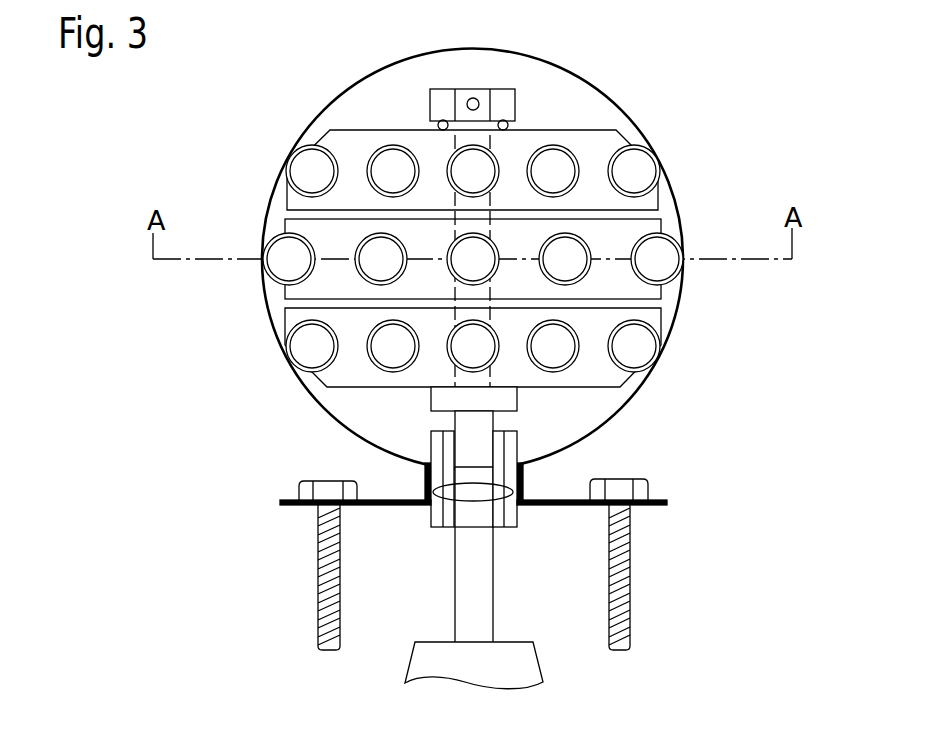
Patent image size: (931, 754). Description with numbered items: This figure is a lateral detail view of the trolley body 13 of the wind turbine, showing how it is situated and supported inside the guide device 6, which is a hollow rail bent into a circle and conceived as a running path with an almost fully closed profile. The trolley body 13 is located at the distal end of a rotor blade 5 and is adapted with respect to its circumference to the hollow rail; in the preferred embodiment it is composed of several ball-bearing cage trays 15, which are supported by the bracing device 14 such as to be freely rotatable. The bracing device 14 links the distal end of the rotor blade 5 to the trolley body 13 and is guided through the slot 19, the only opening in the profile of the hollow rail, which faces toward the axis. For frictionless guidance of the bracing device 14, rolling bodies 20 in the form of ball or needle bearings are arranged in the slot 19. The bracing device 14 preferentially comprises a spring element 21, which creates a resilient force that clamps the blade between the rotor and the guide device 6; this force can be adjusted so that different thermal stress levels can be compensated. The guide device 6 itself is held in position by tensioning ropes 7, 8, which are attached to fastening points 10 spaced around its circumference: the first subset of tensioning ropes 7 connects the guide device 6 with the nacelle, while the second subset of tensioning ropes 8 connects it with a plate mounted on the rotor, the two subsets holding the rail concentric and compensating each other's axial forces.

The rotor blade 5 is at (514, 675).
The guide device 6 is at (563, 70).
The tensioning ropes 7 is at (303, 622).
The tensioning ropes 8 is at (648, 622).
The fastening points 10 is at (298, 490).
The trolley body 13 is at (668, 189).
The bracing device 14 is at (515, 558).
The ball-bearing cage trays 15 is at (255, 157).
The slot 19 is at (462, 494).
The rolling bodies 20 is at (427, 478).
The spring element 21 is at (447, 584).